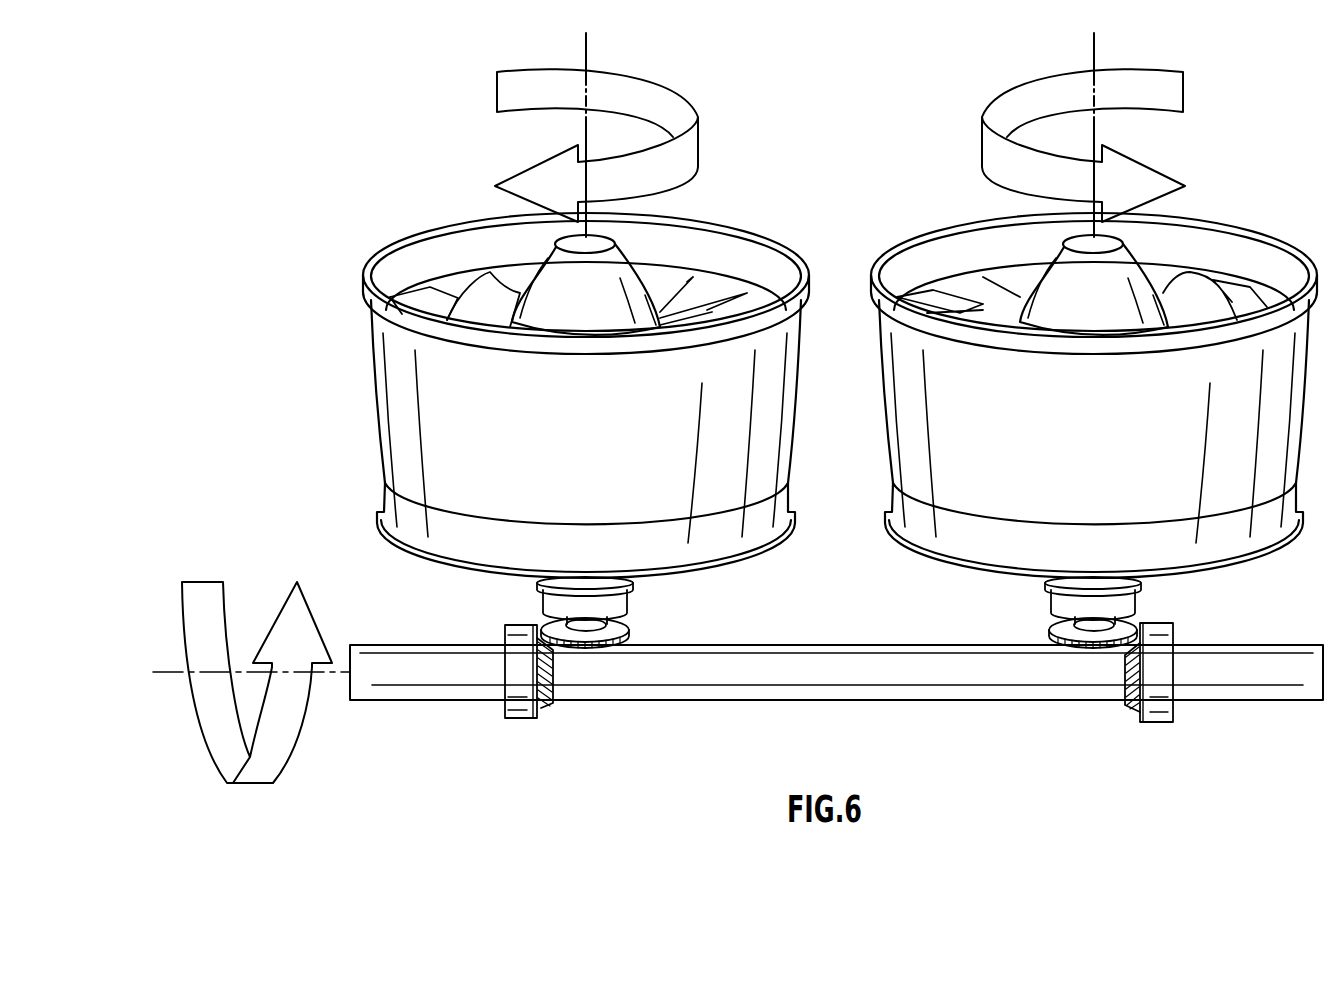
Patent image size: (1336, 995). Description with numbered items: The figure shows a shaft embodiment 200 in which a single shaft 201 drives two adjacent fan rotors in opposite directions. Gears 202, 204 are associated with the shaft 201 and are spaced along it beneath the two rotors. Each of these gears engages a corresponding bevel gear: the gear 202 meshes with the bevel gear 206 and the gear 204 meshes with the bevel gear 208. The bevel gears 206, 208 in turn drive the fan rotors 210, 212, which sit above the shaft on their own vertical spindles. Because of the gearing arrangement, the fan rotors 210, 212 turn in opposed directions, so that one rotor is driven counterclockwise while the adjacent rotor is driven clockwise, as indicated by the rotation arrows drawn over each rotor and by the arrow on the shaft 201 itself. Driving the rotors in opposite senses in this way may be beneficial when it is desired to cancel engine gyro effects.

The shaft embodiment 200 is at (792, 119).
The shaft 201 is at (743, 688).
The gear 202 is at (520, 718).
The gear 204 is at (1135, 713).
The bevel gear 206 is at (630, 632).
The bevel gear 208 is at (1050, 632).
The fan rotor 210 is at (430, 307).
The fan rotor 212 is at (983, 303).